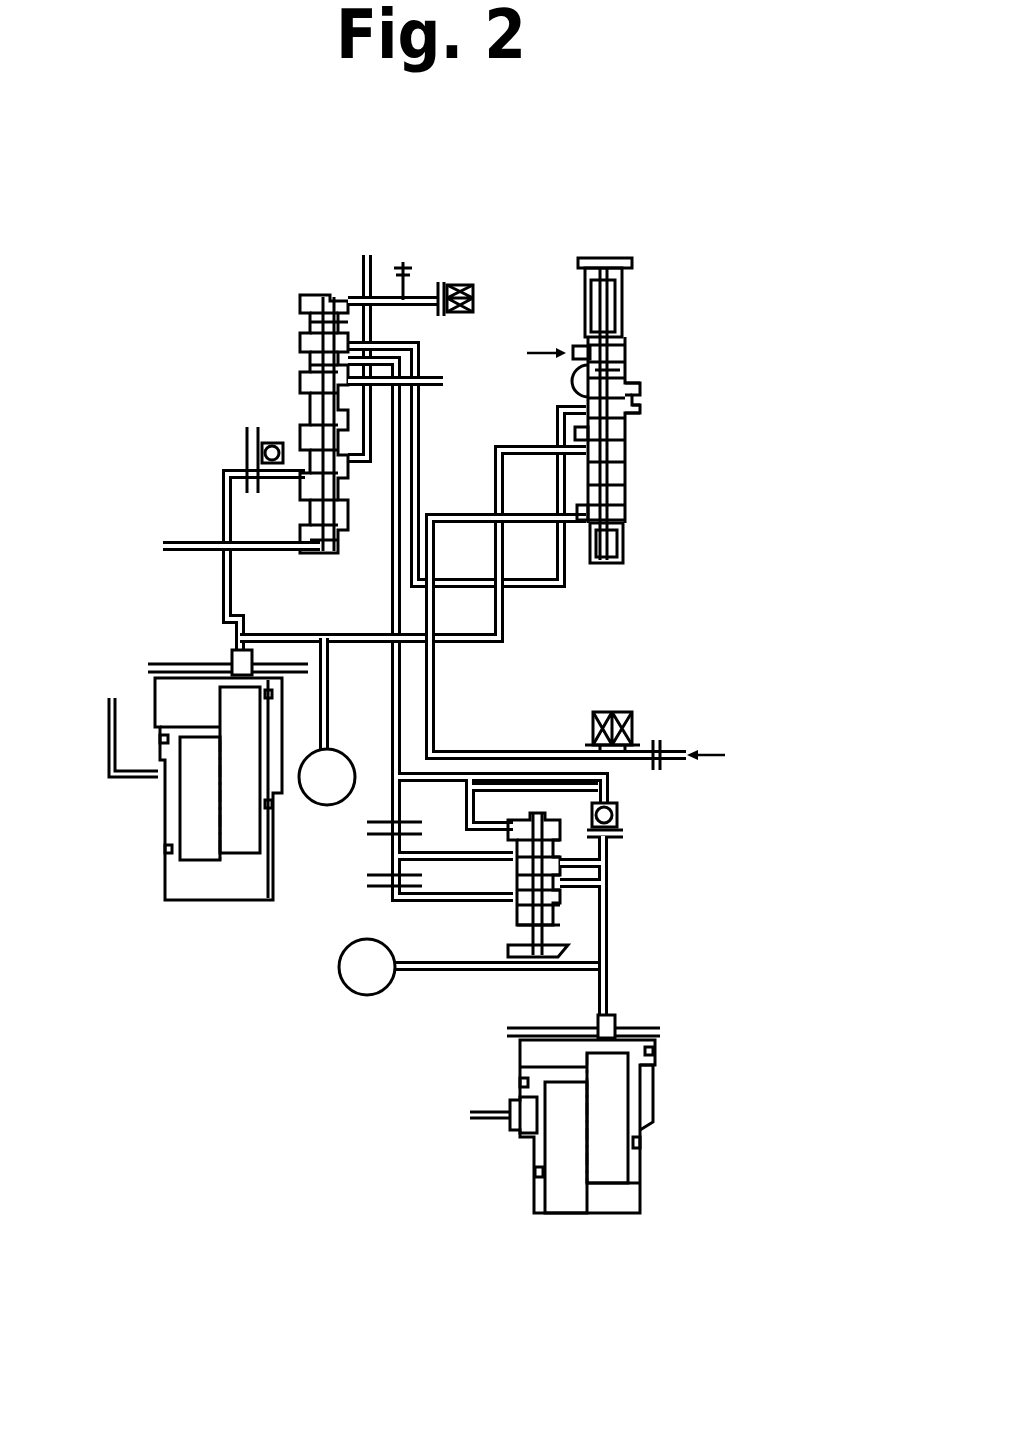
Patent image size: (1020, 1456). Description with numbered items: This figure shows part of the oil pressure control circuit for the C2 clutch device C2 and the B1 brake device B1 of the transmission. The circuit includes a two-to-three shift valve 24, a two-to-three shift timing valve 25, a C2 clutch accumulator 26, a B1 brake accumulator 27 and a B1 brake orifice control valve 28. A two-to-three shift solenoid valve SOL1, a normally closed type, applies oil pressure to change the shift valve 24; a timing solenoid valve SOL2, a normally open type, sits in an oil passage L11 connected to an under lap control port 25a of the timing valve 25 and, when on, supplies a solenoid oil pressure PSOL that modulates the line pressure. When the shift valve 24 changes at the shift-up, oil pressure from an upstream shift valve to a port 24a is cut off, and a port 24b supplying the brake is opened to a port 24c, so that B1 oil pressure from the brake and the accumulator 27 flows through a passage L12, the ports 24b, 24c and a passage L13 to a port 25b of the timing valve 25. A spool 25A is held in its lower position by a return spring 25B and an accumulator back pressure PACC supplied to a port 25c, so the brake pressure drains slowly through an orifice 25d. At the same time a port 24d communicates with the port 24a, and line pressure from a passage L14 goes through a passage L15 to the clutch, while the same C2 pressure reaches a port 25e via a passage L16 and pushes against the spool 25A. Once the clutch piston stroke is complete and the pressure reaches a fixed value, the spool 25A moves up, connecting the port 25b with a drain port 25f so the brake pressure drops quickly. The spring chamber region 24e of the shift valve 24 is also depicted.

The 2→3 shift valve 24 is at (244, 390).
The port 24a is at (344, 382).
The port 24b is at (346, 353).
The port 24c is at (344, 328).
The port 24d is at (313, 522).
The spring chamber of valve 24 24e is at (310, 481).
The 2→3 shift timing valve 25 is at (679, 366).
The under lap control port 25a is at (582, 545).
The port 25b is at (622, 345).
The port 25c is at (582, 347).
The orifice 25d is at (640, 398).
The port 25e is at (614, 470).
The drain port 25f is at (637, 389).
The spool 25A is at (624, 371).
The return spring 25B is at (620, 287).
The C2 clutch accumulator 26 is at (202, 908).
The B1 brake accumulator 27 is at (570, 1222).
The B1 brake orifice control valve 28 is at (550, 814).
The oil passage L11 is at (556, 752).
The passage L12 is at (393, 603).
The passage L13 is at (604, 490).
The passage L14 is at (365, 272).
The passage L15 is at (222, 579).
The passage L16 is at (500, 618).
The 2→3 shift solenoid valve SOL1 is at (472, 290).
The timing solenoid valve SOL2 is at (620, 711).
The accumulator back pressure PACC is at (510, 352).
The solenoid oil pressure PSOL is at (730, 751).
The C2 clutch device C2 is at (327, 721).
The B1 brake device B1 is at (471, 967).